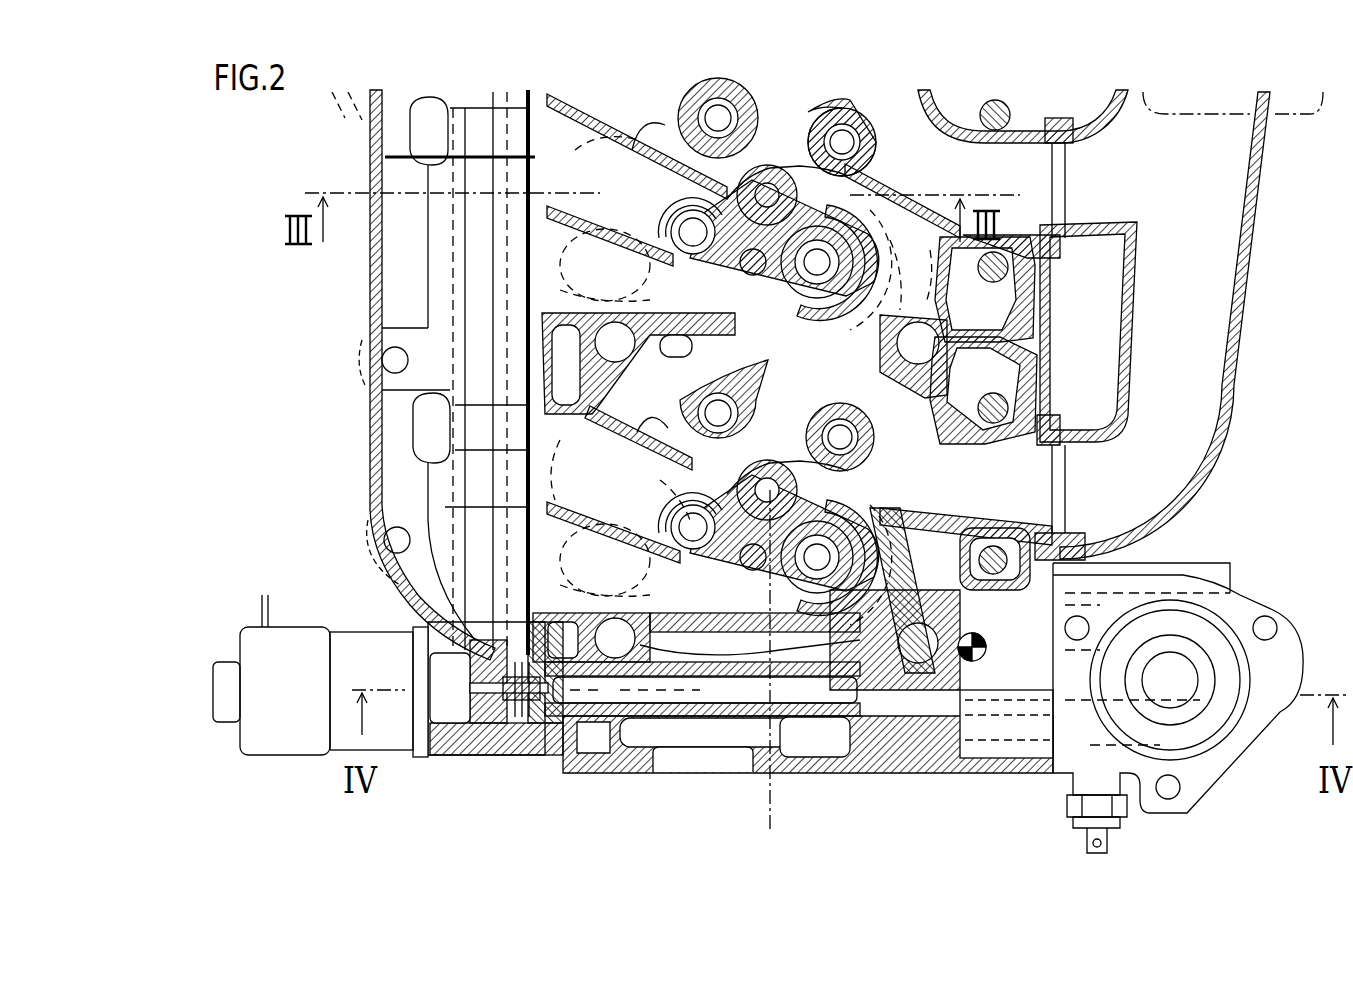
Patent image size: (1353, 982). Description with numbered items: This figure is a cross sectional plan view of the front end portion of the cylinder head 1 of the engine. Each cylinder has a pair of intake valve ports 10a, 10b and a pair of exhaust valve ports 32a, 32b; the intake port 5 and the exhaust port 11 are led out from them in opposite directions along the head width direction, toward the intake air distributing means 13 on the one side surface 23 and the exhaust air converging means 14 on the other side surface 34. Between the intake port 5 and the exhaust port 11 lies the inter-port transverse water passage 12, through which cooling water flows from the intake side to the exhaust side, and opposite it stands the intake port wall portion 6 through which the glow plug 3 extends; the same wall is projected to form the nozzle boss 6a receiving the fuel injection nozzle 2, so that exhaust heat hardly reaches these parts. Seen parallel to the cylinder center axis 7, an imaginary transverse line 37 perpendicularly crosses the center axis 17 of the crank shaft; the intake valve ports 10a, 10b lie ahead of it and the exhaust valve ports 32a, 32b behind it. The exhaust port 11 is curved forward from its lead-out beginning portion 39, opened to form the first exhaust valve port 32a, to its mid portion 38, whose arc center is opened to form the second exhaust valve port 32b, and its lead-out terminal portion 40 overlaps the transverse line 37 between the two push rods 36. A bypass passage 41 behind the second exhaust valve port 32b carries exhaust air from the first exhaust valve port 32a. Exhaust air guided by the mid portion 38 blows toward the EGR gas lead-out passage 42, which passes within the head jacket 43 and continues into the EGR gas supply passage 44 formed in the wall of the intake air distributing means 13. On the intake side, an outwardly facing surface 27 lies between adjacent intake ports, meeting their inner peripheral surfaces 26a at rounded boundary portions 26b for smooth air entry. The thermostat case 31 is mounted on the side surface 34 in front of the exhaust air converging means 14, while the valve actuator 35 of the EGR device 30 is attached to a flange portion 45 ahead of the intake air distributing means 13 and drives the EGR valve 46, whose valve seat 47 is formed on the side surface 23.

The cylinder head 1 is at (701, 94).
The fuel injection nozzle 2 is at (768, 129).
The glow plug 3 is at (646, 357).
The intake port 5 is at (545, 360).
The intake port wall portion 6 is at (707, 324).
The nozzle boss 6a is at (801, 118).
The cylinder center axis 7 is at (724, 428).
The intake valve port 10a is at (613, 399).
The intake valve port 10b is at (789, 415).
The exhaust port 11 is at (1083, 325).
The inter-port transverse water passage 12 is at (955, 97).
The intake air distributing means 13 is at (395, 375).
The exhaust air converging means 14 is at (1167, 325).
The center axis of the crank shaft 17 is at (807, 676).
The side surface 23 is at (433, 346).
The inner peripheral surface 26a is at (620, 480).
The boundary portion 26b is at (422, 371).
The outwardly facing surface 27 is at (419, 371).
The EGR device 30 is at (347, 736).
The thermostat case 31 is at (1190, 692).
The first exhaust valve port 32a is at (768, 385).
The second exhaust valve port 32b is at (849, 486).
The other side surface 34 is at (1120, 91).
The valve actuator 35 is at (264, 703).
The push rods 36 is at (1001, 519).
The imaginary transverse line 37 is at (1088, 476).
The mid portion 38 is at (948, 354).
The lead-out beginning portion 39 is at (638, 427).
The lead-out terminal portion 40 is at (1088, 332).
The bypass passage 41 is at (970, 314).
The EGR gas lead-out passage 42 is at (793, 682).
The head jacket 43 is at (699, 784).
The EGR gas supply passage 44 is at (388, 530).
The flange portion 45 is at (455, 721).
The EGR valve 46 is at (495, 729).
The valve seat 47 is at (595, 794).